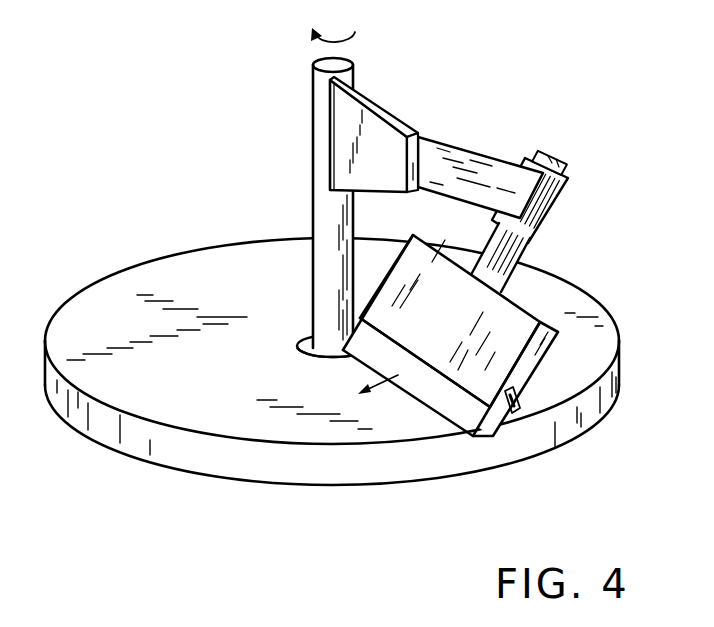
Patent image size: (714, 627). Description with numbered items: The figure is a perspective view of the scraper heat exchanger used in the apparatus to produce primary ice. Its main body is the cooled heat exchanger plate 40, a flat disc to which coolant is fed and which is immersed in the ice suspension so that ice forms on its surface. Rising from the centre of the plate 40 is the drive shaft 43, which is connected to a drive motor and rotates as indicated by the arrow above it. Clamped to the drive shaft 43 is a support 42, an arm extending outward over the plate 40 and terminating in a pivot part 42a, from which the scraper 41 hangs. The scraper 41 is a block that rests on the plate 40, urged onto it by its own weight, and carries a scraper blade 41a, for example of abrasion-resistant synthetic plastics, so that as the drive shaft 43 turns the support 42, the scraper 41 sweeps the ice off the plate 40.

The heat exchanger plate 40 is at (177, 452).
The scraper 41 is at (507, 357).
The scraper blade 41a is at (417, 388).
The support 42 is at (453, 146).
The pivot collar 42a is at (533, 217).
The drive shaft 43 is at (353, 70).